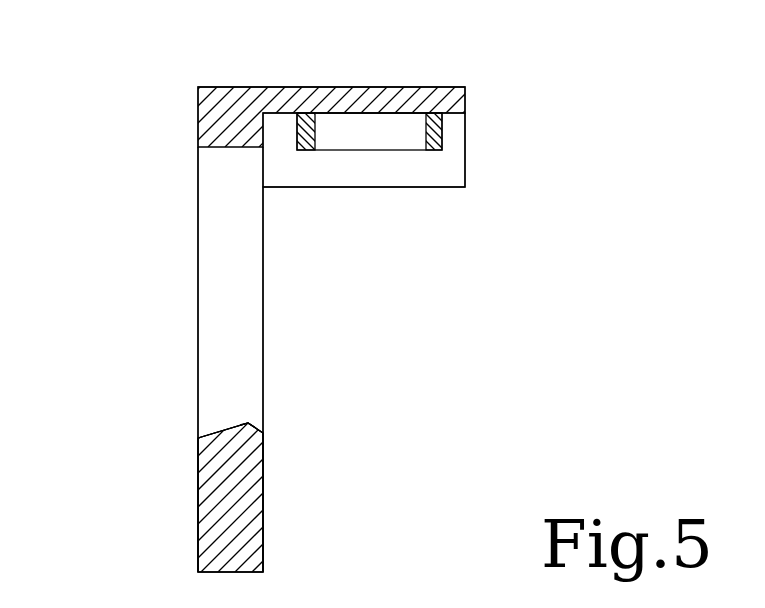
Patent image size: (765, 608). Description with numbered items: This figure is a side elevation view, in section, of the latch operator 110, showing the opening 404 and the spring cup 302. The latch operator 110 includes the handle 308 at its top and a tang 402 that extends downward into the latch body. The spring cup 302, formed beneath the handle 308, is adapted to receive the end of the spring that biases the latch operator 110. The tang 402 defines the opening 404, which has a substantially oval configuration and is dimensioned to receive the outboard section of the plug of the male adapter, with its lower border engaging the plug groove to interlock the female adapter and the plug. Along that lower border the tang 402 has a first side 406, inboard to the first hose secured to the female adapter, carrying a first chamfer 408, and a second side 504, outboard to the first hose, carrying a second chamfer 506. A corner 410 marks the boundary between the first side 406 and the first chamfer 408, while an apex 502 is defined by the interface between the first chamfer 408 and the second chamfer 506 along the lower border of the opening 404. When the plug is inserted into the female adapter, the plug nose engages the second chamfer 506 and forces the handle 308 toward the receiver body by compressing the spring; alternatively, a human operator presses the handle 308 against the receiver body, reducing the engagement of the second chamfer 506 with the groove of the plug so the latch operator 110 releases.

The latch operator 110 is at (78, 96).
The handle 308 is at (352, 87).
The spring cup 302 is at (405, 150).
The opening 404 is at (243, 235).
The tang 402 is at (268, 522).
The first side 406 is at (266, 478).
The first chamfer 408 is at (265, 418).
The corner 410 is at (252, 428).
The apex 502 is at (248, 422).
The second side 504 is at (198, 484).
The second chamfer 506 is at (221, 428).